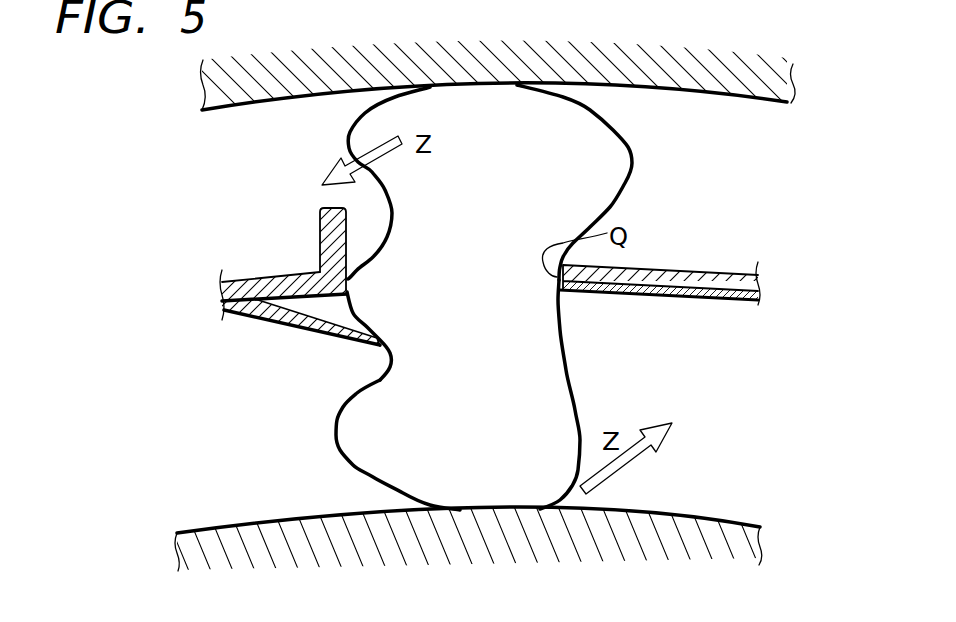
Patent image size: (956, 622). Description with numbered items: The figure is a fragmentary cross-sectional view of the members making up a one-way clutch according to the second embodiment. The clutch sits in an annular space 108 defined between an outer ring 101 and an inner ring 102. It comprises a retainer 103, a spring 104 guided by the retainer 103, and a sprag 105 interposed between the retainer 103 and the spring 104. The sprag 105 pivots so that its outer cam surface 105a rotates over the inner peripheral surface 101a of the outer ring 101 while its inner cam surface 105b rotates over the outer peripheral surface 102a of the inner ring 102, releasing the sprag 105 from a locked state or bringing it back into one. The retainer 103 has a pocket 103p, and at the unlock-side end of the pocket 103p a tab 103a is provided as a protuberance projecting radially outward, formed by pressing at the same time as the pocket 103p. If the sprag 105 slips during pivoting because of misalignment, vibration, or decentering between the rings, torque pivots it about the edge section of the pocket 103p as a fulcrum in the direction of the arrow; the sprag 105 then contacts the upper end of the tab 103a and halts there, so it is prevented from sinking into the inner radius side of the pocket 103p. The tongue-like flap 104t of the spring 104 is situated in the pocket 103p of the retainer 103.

The outer ring 101 is at (523, 80).
The inner peripheral surface 101a is at (757, 103).
The inner ring 102 is at (479, 539).
The outer peripheral surface 102a is at (713, 518).
The retainer 103 is at (441, 286).
The tab 103a is at (333, 225).
The pocket 103p is at (297, 322).
The spring 104 is at (525, 328).
The tongue-like flap 104t is at (350, 337).
The sprag 105 is at (461, 255).
The outer cam surface 105a is at (577, 103).
The inner cam surface 105b is at (370, 475).
The annular space 108 is at (700, 197).